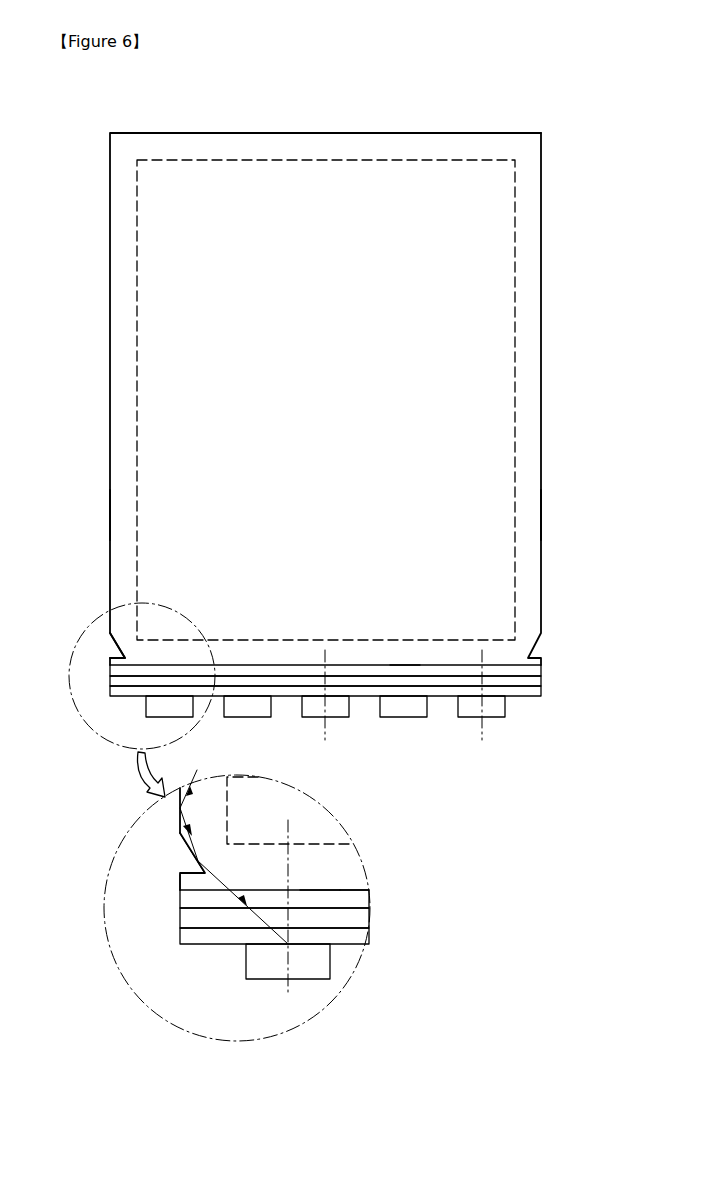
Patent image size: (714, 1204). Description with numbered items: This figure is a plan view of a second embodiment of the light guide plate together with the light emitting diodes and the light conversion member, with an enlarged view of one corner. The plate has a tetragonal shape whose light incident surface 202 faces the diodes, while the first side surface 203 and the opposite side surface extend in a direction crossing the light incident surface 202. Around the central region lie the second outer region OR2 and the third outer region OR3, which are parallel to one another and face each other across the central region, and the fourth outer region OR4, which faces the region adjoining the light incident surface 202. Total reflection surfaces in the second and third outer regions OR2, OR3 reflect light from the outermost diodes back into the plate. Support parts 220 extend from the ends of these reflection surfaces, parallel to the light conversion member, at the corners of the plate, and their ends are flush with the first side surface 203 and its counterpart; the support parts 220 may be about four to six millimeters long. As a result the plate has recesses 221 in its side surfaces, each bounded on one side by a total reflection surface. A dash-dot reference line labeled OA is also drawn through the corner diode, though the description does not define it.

The light incident surface 202 is at (322, 890).
The first side surface 203 is at (542, 368).
The support part 220 is at (180, 886).
The recess 221 is at (192, 863).
The second outer region OR2 is at (535, 510).
The third outer region OR3 is at (118, 510).
The fourth outer region OR4 is at (330, 143).
The optical axis OA is at (402, 708).